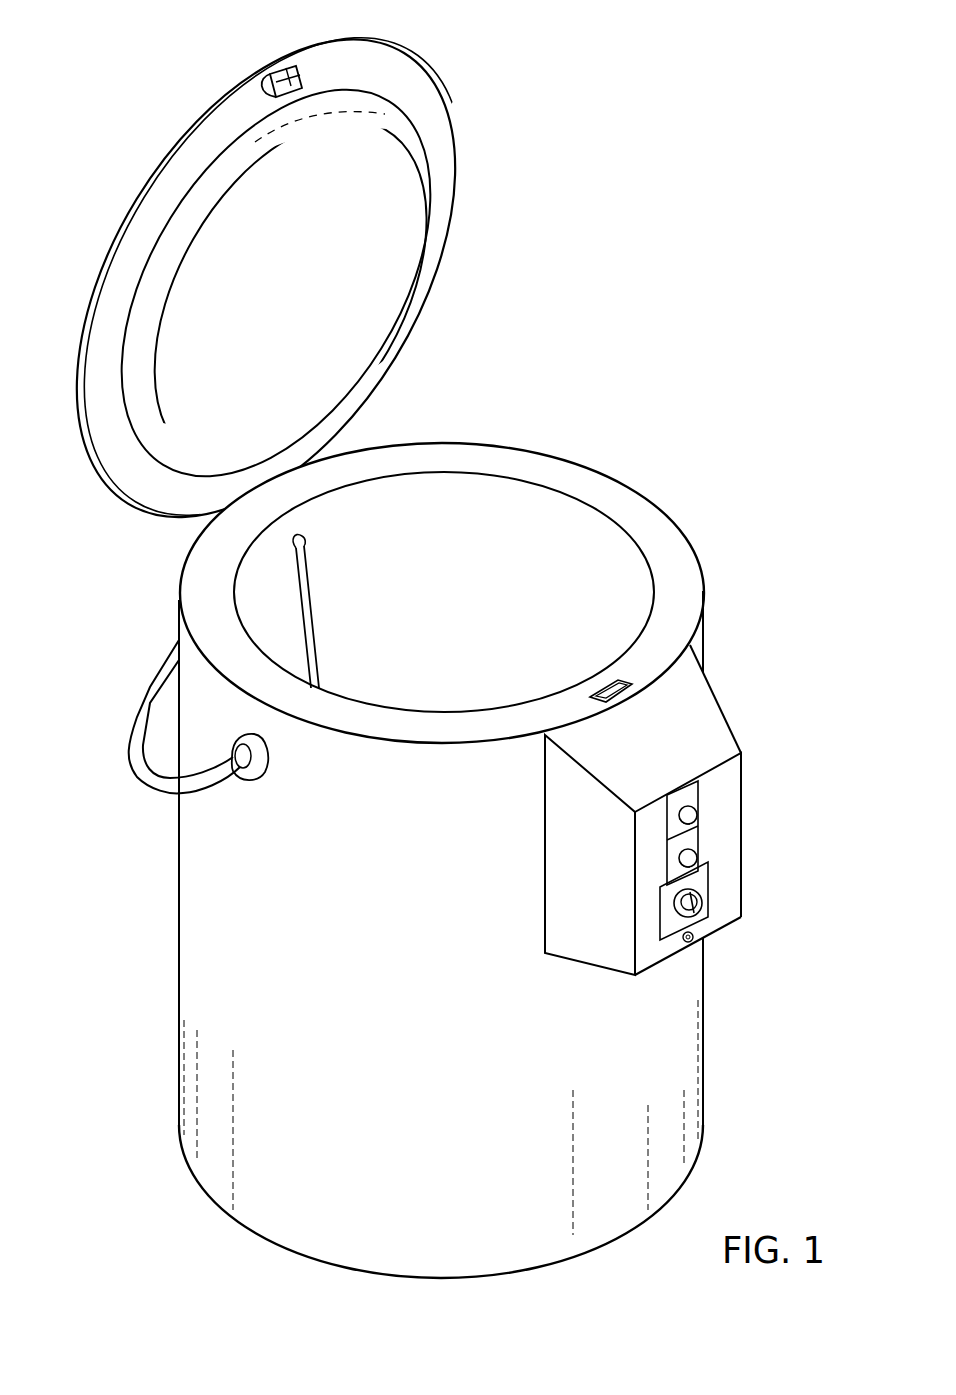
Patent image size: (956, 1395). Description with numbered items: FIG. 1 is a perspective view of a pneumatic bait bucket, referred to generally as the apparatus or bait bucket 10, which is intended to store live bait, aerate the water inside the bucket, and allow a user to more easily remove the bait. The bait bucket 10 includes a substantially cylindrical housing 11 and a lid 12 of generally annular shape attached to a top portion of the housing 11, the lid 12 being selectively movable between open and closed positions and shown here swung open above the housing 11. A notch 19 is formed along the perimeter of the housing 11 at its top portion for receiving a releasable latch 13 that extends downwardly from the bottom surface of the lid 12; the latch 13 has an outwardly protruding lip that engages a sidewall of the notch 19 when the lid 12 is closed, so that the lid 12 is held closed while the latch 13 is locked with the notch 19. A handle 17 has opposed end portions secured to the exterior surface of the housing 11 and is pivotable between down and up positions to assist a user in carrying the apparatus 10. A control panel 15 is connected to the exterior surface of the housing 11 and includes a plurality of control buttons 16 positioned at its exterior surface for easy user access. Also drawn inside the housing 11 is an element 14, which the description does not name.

The bait bucket 10 is at (633, 398).
The housing 11 is at (672, 516).
The lid 12 is at (445, 124).
The releasable latch 13 is at (283, 72).
The rod 14 is at (316, 604).
The control panel 15 is at (722, 726).
The control buttons 16 is at (730, 937).
The handle 17 is at (152, 689).
The notch 19 is at (600, 682).